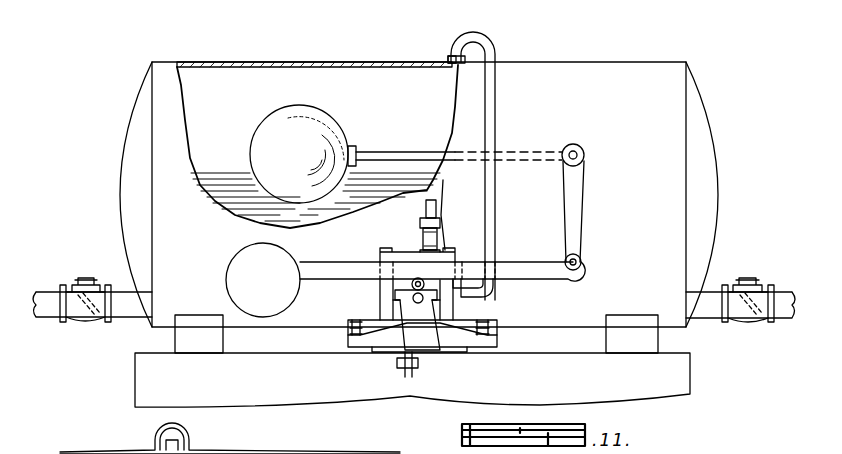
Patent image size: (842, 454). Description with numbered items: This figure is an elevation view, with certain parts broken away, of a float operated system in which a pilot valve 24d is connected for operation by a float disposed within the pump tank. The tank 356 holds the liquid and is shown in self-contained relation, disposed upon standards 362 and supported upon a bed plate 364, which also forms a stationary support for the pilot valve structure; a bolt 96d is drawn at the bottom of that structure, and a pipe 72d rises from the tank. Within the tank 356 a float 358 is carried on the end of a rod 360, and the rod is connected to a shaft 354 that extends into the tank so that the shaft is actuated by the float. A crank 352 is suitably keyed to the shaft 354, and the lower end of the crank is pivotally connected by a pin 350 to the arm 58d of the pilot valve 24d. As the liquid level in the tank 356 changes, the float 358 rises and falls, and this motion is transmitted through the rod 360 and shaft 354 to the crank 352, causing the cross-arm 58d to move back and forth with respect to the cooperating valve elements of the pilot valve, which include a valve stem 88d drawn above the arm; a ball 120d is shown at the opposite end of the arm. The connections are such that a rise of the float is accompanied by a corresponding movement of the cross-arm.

The tank 356 is at (540, 62).
The float 358 is at (299, 154).
The rod 360 is at (383, 152).
The supply pipe 72d is at (496, 106).
The shaft 354 is at (584, 152).
The crank 352 is at (583, 212).
The pin 350 is at (582, 262).
The pilot valve 24d is at (430, 265).
The valve stem 88d is at (432, 200).
The arm 58d is at (462, 290).
The counterweight ball 120d is at (232, 272).
The bolt 96d is at (413, 378).
The standards 362 is at (196, 345).
The bed plate 364 is at (412, 380).